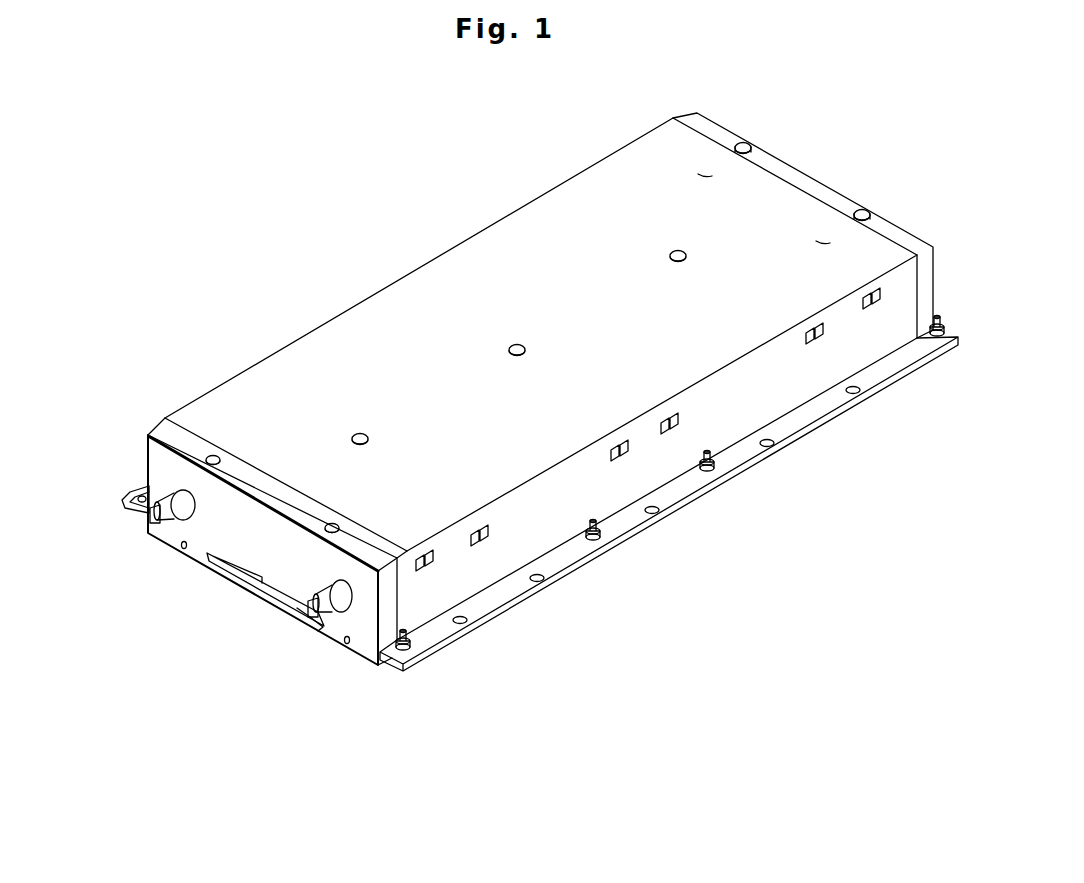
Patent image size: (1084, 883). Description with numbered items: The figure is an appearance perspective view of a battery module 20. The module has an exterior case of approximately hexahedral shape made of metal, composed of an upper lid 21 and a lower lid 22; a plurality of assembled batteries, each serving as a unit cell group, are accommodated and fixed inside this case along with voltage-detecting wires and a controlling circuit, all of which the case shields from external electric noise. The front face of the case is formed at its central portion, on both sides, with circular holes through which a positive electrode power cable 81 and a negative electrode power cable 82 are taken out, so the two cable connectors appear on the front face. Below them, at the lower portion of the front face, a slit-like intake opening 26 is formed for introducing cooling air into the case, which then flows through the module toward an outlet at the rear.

The battery module 20 is at (407, 190).
The upper lid 21 is at (365, 345).
The lower lid 22 is at (673, 510).
The intake opening 26 is at (257, 597).
The positive electrode power cable 81 is at (313, 618).
The negative electrode power cable 82 is at (147, 487).